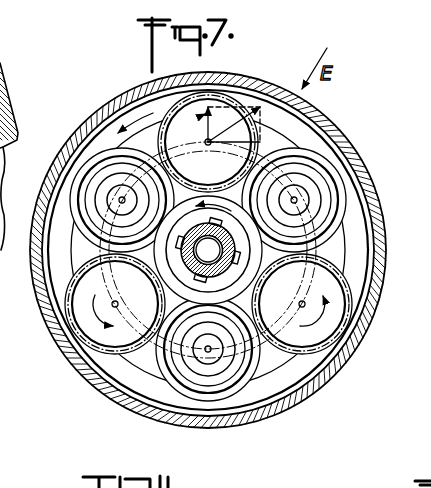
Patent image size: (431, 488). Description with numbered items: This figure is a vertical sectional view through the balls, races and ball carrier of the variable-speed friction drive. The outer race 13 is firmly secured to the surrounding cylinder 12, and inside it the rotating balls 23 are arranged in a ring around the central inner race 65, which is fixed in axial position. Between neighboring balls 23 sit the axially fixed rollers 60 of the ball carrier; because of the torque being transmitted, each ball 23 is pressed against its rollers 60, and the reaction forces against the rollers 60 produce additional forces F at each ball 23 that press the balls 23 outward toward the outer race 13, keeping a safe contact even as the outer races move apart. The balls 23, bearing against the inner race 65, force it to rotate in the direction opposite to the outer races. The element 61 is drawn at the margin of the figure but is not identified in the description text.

The cylinder 12 is at (130, 92).
The outer race 13 is at (297, 130).
The balls 23 is at (216, 79).
The rollers 60 is at (332, 177).
The inner race 65 is at (231, 267).
The adjacent member 61 is at (25, 99).